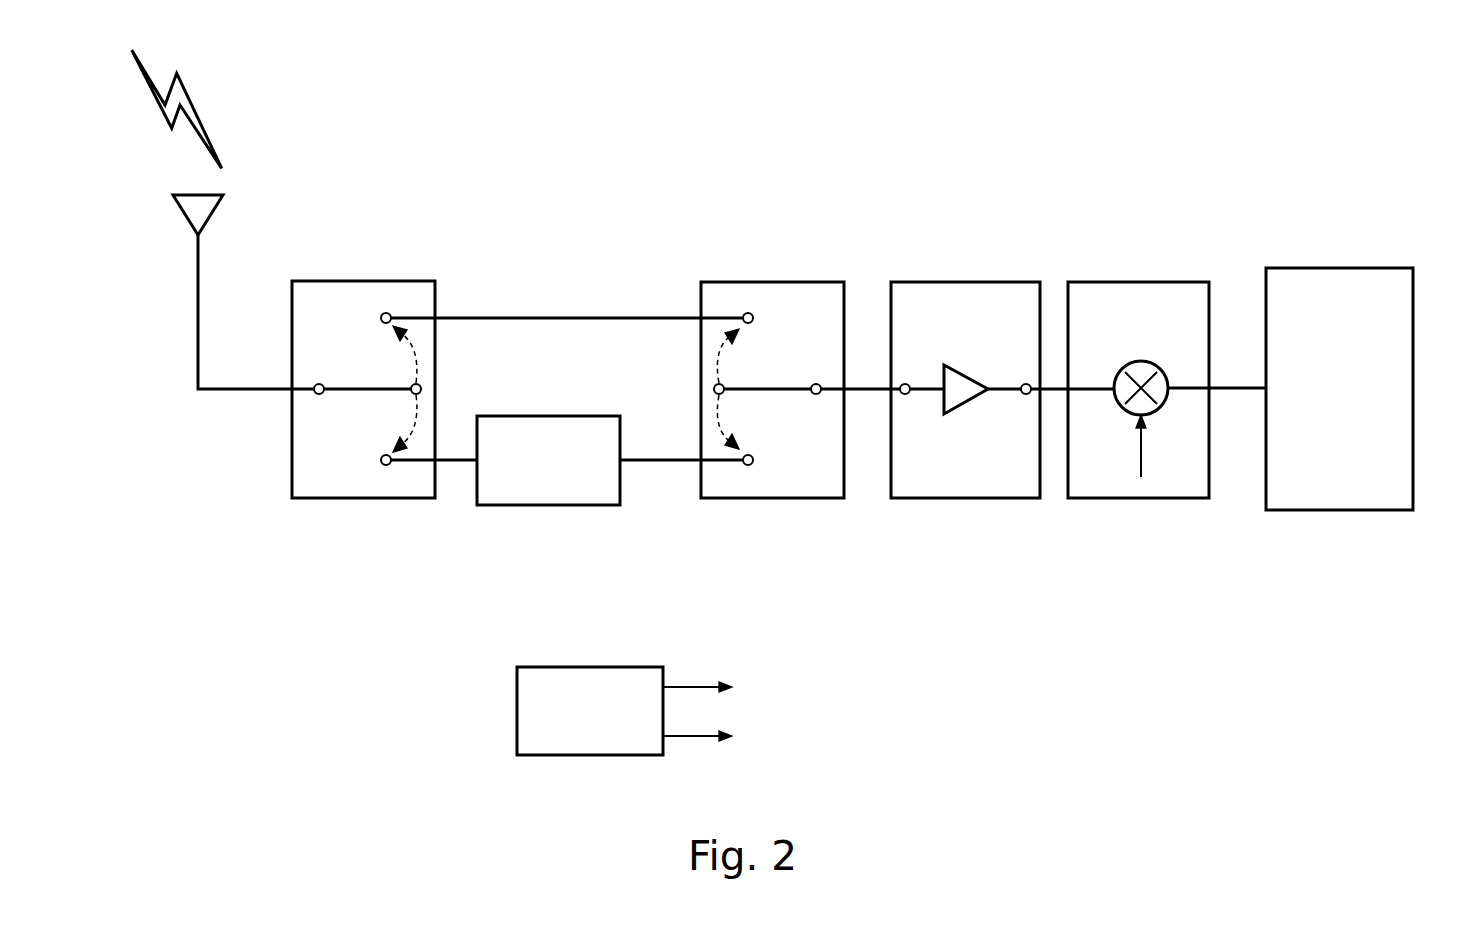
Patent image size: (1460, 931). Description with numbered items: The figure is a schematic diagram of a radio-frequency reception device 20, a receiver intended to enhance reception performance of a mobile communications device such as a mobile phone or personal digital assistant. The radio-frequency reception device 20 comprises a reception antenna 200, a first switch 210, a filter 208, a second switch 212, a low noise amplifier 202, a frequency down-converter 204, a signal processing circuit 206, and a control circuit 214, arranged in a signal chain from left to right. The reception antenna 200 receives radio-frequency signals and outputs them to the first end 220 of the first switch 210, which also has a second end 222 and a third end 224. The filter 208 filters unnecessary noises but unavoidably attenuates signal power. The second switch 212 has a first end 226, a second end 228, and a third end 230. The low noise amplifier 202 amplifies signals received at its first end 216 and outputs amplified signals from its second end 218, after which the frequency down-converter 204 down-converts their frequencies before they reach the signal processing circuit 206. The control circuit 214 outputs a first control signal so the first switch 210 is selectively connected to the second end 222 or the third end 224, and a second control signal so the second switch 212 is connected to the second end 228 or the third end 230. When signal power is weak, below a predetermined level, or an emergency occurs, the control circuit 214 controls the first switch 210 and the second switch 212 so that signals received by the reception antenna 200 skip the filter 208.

The radio-frequency reception device 20 is at (1300, 93).
The reception antenna 200 is at (203, 202).
The low noise amplifier 202 is at (1005, 282).
The frequency down-converter 204 is at (1175, 282).
The signal processing circuit 206 is at (1378, 268).
The filter 208 is at (597, 416).
The first switch 210 is at (345, 281).
The second switch 212 is at (801, 282).
The control circuit 214 is at (635, 667).
The first end of the low noise amplifier 216 is at (905, 384).
The second end of the low noise amplifier 218 is at (1026, 399).
The first end of the first switch 220 is at (318, 384).
The second end of the first switch 222 is at (386, 313).
The third end of the first switch 224 is at (386, 465).
The first end of the second switch 226 is at (816, 384).
The second end of the second switch 228 is at (748, 313).
The third end of the second switch 230 is at (748, 467).